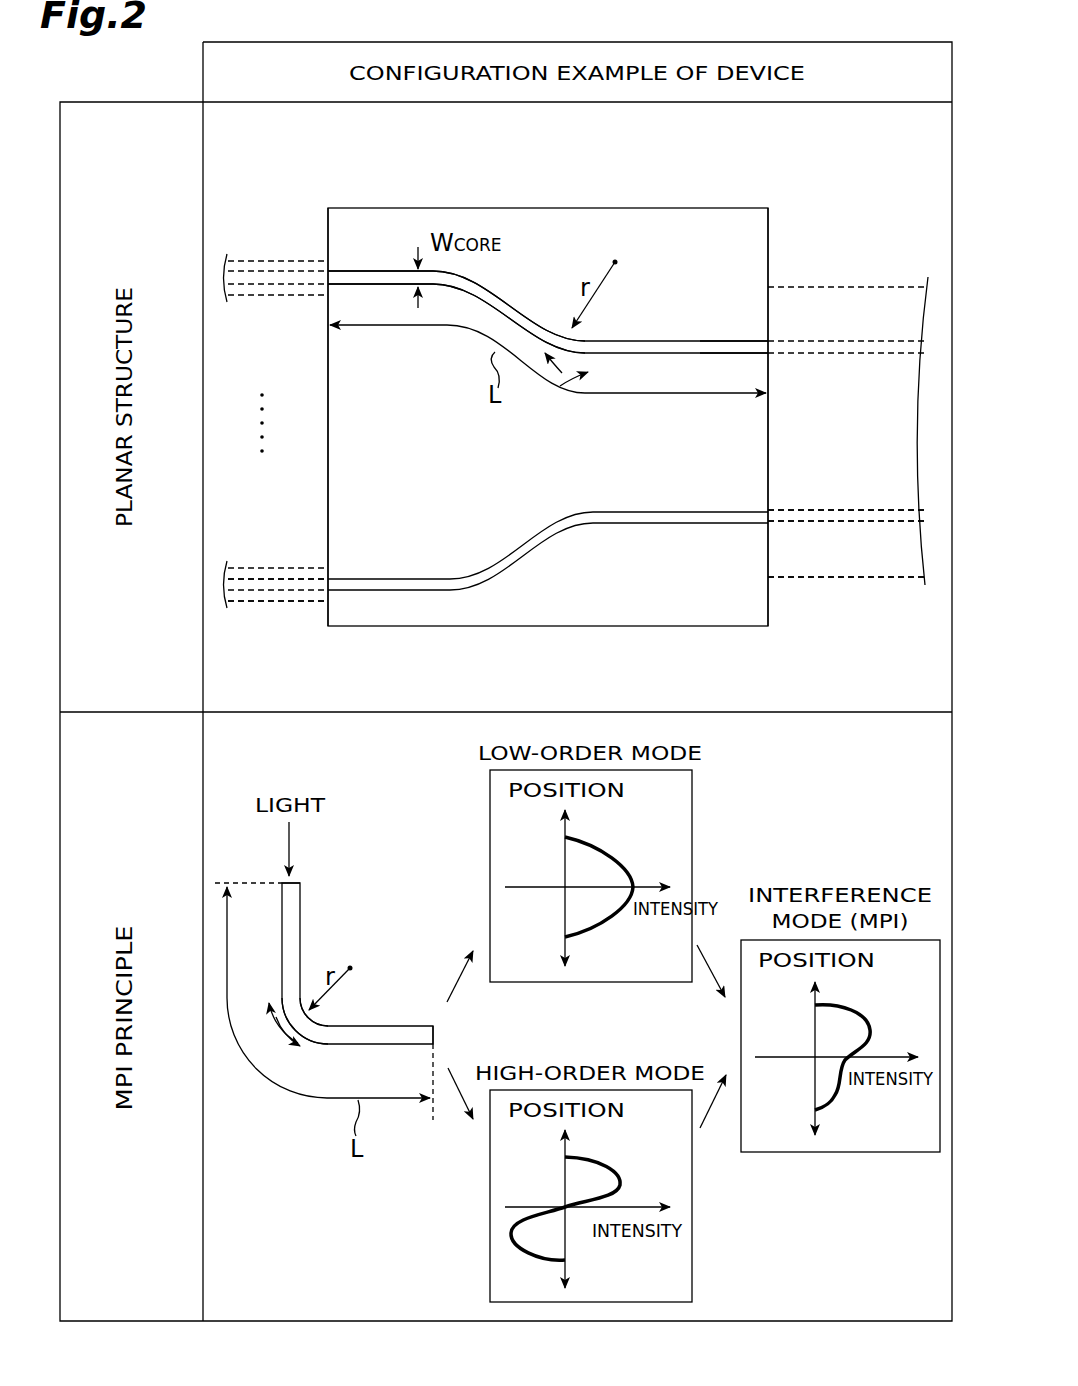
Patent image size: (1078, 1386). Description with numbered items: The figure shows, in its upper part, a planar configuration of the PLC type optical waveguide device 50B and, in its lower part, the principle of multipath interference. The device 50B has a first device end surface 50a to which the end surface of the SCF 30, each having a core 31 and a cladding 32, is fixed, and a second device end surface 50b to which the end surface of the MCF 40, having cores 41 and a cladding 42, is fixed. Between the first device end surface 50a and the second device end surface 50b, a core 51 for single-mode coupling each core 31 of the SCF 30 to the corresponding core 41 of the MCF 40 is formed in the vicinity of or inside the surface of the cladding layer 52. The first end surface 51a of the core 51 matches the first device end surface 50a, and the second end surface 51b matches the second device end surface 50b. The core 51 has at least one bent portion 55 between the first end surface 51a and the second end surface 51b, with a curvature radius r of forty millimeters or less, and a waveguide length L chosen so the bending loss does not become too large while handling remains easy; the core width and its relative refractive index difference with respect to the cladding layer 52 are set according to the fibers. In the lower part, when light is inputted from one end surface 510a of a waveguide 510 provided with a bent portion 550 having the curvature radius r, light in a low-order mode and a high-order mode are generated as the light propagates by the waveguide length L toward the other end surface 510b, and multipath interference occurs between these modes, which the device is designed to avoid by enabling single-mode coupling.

The PLC type optical waveguide device 50B is at (702, 194).
The first device end surface 50a is at (328, 226).
The second device end surface 50b is at (768, 232).
The core 51 is at (663, 340).
The first end surface 51a is at (332, 276).
The second end surface 51b is at (768, 346).
The cladding layer 52 is at (655, 608).
The bent portion 55 is at (565, 388).
The SCF 30 is at (275, 603).
The core 31 is at (240, 600).
The cladding 32 is at (310, 597).
The MCF 40 is at (903, 577).
The core 41 is at (803, 523).
The cladding 42 is at (857, 562).
The waveguide 510 is at (390, 1025).
The one end surface 510a is at (300, 883).
The other end surface 510b is at (435, 1034).
The bent portion 550 is at (278, 1042).